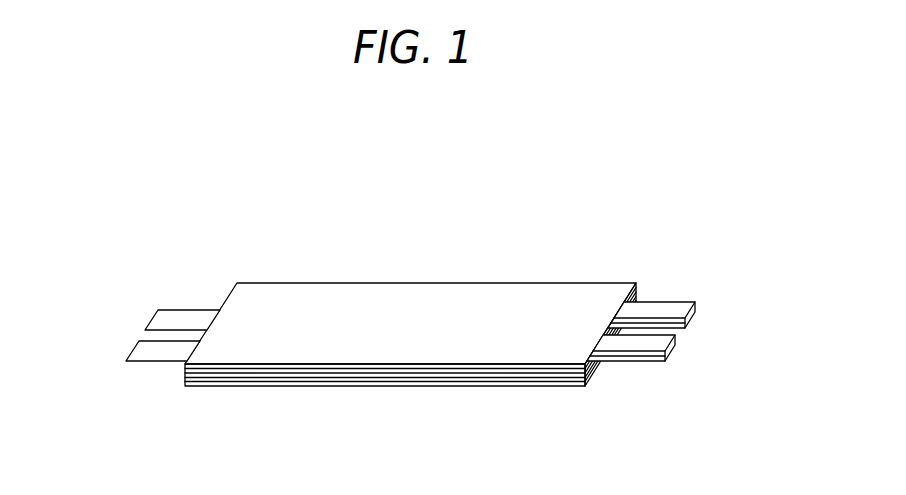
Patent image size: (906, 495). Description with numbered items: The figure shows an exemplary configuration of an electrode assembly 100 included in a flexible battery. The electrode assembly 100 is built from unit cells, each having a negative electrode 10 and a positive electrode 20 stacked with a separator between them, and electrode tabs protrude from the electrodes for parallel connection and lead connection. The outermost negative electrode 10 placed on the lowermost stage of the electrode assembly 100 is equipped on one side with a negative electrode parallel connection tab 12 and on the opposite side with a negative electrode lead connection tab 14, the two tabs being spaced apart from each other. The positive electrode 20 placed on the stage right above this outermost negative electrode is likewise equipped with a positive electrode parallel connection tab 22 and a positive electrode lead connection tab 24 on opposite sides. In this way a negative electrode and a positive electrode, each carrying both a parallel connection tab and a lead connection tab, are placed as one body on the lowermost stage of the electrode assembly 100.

The electrode assembly 100 is at (228, 163).
The negative electrode 10 is at (410, 343).
The positive electrode 20 is at (382, 373).
The negative electrode parallel connection tab 12 is at (687, 322).
The negative electrode lead connection tab 14 is at (150, 327).
The positive electrode parallel connection tab 22 is at (672, 352).
The positive electrode lead connection tab 24 is at (133, 349).